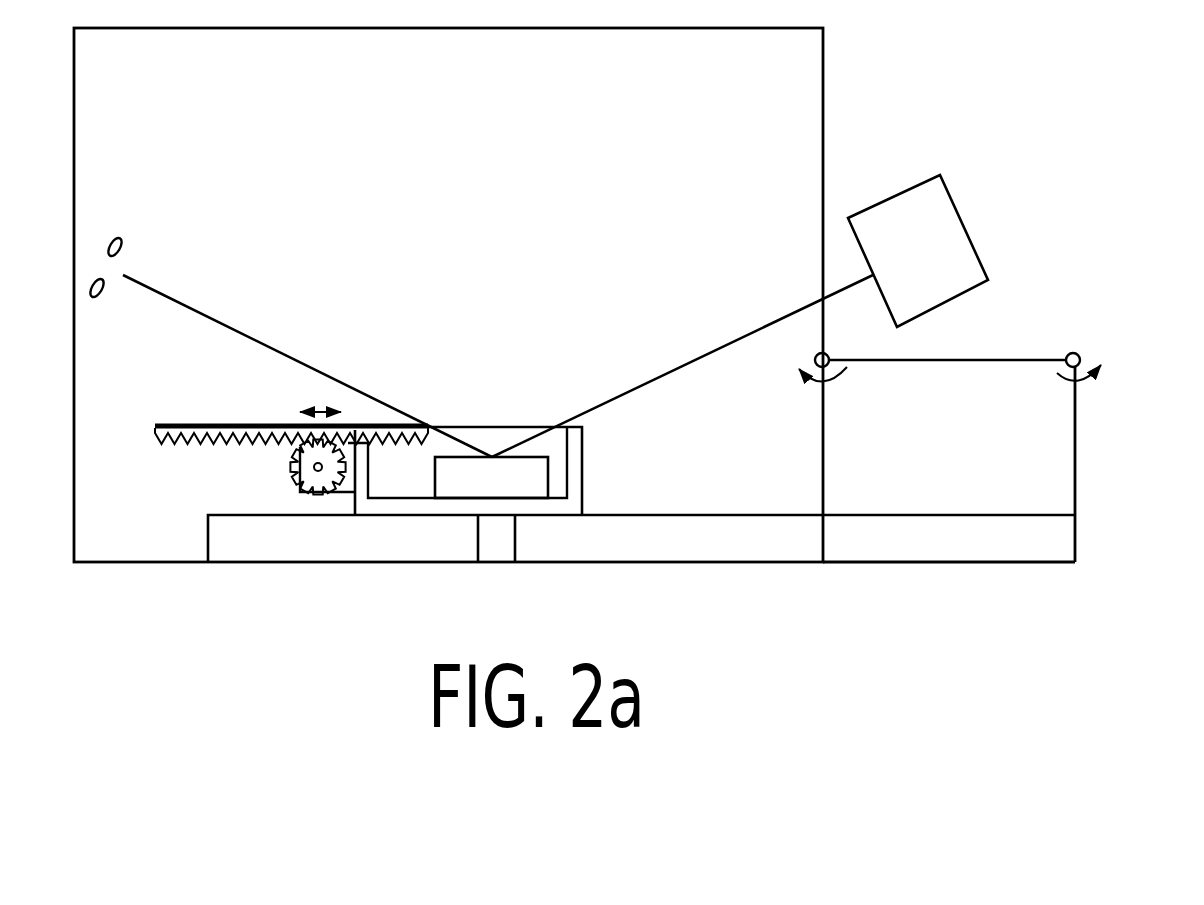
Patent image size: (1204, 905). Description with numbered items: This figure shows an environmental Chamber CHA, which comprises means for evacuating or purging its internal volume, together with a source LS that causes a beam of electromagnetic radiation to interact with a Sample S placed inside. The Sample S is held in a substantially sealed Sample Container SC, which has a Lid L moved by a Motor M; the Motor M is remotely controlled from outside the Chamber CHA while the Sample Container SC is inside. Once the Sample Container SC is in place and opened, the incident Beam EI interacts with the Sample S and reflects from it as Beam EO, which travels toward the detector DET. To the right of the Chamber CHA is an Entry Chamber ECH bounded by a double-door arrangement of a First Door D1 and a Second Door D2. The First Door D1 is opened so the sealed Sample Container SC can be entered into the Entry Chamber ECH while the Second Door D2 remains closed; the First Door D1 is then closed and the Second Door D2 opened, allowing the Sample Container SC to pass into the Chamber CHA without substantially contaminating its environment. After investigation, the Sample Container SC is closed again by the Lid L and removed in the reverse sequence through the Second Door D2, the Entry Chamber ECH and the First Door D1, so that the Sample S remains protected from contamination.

The chamber CHA is at (488, 101).
The beam source LS is at (130, 239).
The incident beam EI is at (328, 370).
The lid L is at (262, 415).
The motor M is at (318, 478).
The sample container SC is at (496, 438).
The sample S is at (484, 465).
The reflected beam EO is at (735, 334).
The detector DET is at (961, 203).
The second door D2 is at (834, 445).
The entry chamber ECH is at (949, 481).
The first door D1 is at (1097, 447).